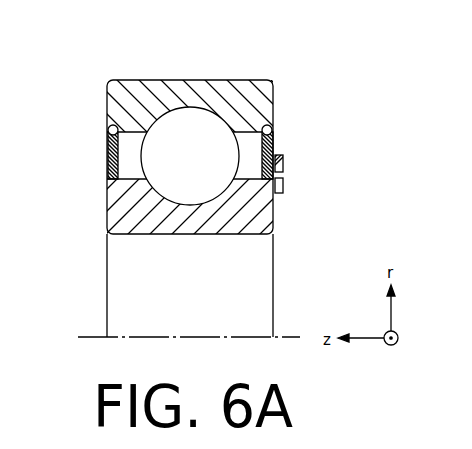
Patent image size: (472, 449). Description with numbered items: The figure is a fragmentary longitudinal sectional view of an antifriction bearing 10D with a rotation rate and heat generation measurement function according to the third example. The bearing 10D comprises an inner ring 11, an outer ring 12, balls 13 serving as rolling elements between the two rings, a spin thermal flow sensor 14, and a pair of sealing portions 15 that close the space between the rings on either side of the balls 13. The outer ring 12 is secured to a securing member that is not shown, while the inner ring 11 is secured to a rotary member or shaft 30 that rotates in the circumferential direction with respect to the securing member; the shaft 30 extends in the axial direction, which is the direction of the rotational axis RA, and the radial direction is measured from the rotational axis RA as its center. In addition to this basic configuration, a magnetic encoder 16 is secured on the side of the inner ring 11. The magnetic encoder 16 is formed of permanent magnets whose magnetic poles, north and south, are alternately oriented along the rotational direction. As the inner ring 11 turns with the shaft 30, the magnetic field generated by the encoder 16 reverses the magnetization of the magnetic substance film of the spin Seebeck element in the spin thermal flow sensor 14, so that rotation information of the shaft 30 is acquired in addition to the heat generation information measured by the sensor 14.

The antifriction bearing with rotation rate and heat generation measurement function 10D is at (80, 88).
The inner ring 11 is at (265, 220).
The outer ring 12 is at (247, 80).
The balls 13 is at (153, 160).
The spin thermal flow sensor 14 is at (285, 158).
The sealing portions 15 is at (276, 133).
The magnetic encoder 16 is at (285, 185).
The rotary member (shaft) 30 is at (207, 303).
The rotational axis RA is at (288, 337).